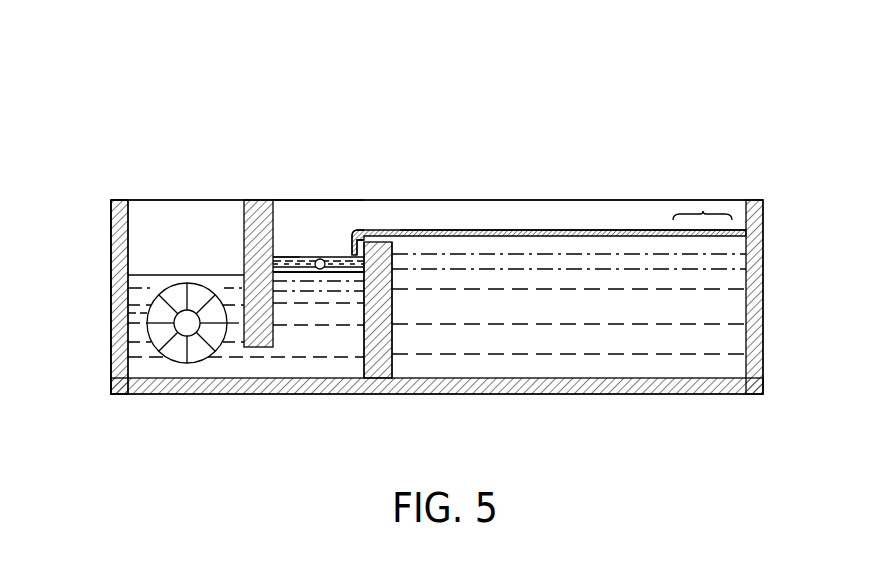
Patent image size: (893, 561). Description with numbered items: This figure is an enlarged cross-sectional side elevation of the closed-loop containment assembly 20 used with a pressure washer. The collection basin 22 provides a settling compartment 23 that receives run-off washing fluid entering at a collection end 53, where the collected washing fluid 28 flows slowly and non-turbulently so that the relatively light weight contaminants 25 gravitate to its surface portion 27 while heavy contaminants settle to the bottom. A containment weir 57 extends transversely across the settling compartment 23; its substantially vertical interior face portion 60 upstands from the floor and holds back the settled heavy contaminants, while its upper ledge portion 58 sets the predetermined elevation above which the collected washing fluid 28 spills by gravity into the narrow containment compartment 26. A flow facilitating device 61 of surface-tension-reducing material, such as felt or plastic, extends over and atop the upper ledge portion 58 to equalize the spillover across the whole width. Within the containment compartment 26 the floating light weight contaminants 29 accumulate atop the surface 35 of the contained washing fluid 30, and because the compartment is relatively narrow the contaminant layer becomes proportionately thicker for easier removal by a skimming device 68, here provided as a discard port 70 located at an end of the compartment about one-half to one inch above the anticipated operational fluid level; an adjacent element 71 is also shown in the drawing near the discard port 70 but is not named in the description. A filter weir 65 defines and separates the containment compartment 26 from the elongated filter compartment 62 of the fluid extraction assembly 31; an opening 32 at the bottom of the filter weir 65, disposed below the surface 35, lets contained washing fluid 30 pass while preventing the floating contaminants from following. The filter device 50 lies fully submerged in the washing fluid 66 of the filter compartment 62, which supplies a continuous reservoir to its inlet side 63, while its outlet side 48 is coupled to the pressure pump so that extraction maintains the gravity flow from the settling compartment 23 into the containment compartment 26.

The containment assembly 20 is at (608, 103).
The collection basin 22 is at (660, 400).
The settling compartment 23 is at (545, 374).
The light weight contaminants 25 is at (597, 230).
The containment compartment 26 is at (363, 335).
The surface portion 27 is at (536, 230).
The collected washing fluid 28 is at (717, 290).
The light weight contaminants 29 is at (330, 215).
The contained washing fluid 30 is at (307, 313).
The fluid extraction assembly 31 is at (138, 314).
The opening 32 is at (257, 362).
The surface 35 is at (285, 257).
The outlet side 48 is at (190, 326).
The filter device 50 is at (170, 357).
The collection end 53 is at (703, 211).
The containment weir 57 is at (388, 342).
The upper ledge portion 58 is at (376, 236).
The interior face portion 60 is at (393, 307).
The flow facilitating device 61 is at (394, 232).
The filter compartment 62 is at (130, 287).
The inlet side 63 is at (130, 337).
The filter weir 65 is at (242, 228).
The washing fluid 66 is at (160, 283).
The skimming device 68 is at (306, 247).
The discard port 70 is at (315, 257).
The liquid in tray 71 is at (340, 257).